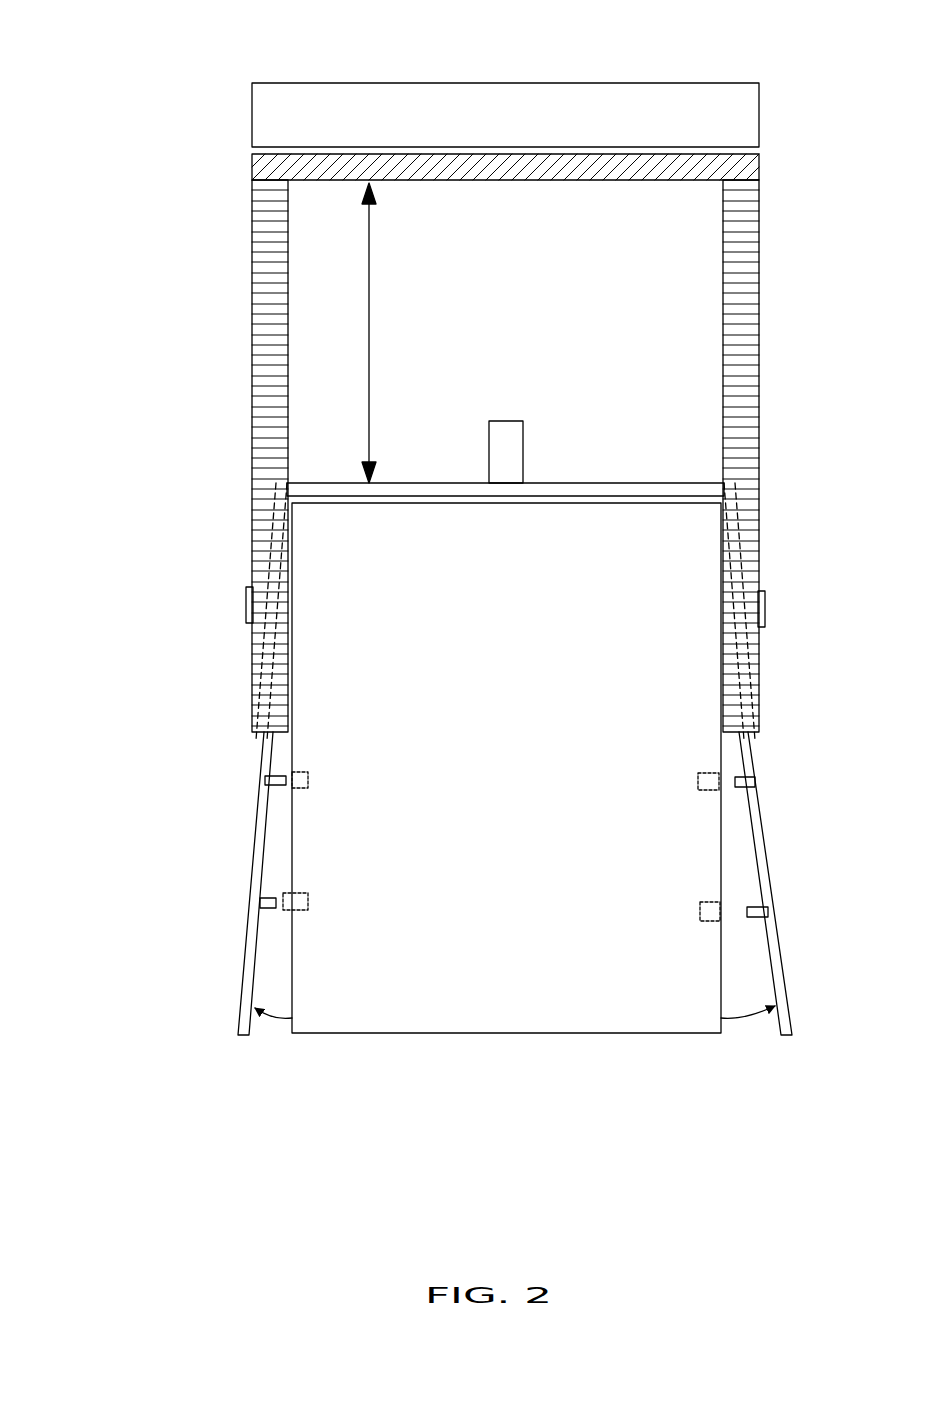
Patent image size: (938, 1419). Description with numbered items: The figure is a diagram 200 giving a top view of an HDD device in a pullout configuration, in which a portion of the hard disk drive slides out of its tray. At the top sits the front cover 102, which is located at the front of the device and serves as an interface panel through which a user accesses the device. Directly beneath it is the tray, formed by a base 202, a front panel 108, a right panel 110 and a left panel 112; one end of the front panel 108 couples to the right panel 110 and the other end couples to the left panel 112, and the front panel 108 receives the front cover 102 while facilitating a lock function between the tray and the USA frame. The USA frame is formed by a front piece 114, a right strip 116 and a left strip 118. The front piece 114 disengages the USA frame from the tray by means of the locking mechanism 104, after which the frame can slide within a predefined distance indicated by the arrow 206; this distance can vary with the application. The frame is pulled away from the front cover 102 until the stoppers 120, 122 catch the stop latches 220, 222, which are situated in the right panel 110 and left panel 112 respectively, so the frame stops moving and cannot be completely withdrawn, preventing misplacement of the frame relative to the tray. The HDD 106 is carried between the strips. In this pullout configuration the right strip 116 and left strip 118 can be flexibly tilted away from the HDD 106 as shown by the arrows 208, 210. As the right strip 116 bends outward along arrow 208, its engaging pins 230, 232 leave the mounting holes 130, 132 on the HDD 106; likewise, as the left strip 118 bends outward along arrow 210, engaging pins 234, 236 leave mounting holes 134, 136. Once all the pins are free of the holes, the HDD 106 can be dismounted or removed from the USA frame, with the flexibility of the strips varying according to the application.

The diagram 200 is at (147, 42).
The front cover 102 is at (505, 115).
The front panel 108 is at (258, 168).
The right panel 110 is at (262, 272).
The left panel 112 is at (748, 250).
The base 202 is at (505, 331).
The arrow 206 is at (369, 360).
The locking mechanism 104 is at (500, 430).
The front piece 114 is at (578, 488).
The HDD 106 is at (506, 768).
The stopper 120 is at (248, 603).
The stop latch 220 is at (248, 617).
The stopper 122 is at (764, 607).
The stop latch 222 is at (762, 625).
The right strip 116 is at (268, 775).
The left strip 118 is at (757, 768).
The engaging pin 230 is at (268, 781).
The mounting hole 130 is at (305, 772).
The engaging pin 232 is at (262, 902).
The mounting hole 132 is at (307, 905).
The engaging pin 234 is at (750, 782).
The mounting hole 134 is at (700, 775).
The engaging pin 236 is at (760, 912).
The mounting hole 136 is at (702, 910).
The arrow 208 is at (280, 1019).
The arrow 210 is at (750, 1019).